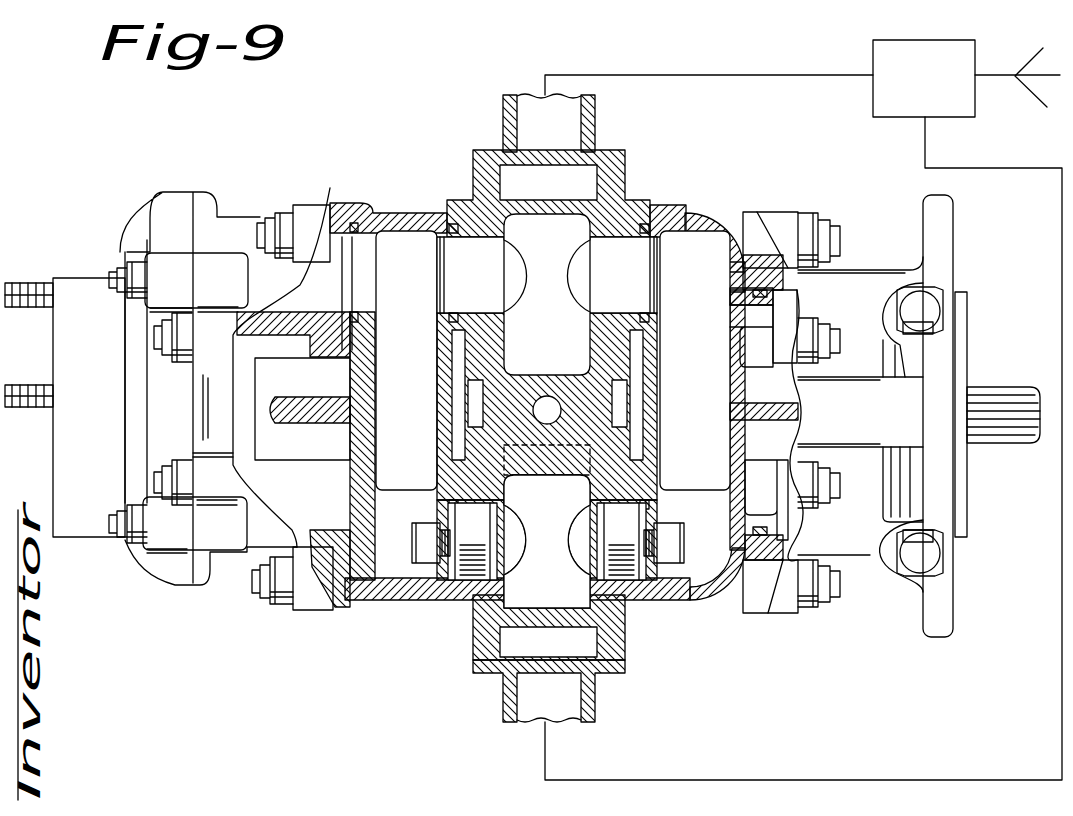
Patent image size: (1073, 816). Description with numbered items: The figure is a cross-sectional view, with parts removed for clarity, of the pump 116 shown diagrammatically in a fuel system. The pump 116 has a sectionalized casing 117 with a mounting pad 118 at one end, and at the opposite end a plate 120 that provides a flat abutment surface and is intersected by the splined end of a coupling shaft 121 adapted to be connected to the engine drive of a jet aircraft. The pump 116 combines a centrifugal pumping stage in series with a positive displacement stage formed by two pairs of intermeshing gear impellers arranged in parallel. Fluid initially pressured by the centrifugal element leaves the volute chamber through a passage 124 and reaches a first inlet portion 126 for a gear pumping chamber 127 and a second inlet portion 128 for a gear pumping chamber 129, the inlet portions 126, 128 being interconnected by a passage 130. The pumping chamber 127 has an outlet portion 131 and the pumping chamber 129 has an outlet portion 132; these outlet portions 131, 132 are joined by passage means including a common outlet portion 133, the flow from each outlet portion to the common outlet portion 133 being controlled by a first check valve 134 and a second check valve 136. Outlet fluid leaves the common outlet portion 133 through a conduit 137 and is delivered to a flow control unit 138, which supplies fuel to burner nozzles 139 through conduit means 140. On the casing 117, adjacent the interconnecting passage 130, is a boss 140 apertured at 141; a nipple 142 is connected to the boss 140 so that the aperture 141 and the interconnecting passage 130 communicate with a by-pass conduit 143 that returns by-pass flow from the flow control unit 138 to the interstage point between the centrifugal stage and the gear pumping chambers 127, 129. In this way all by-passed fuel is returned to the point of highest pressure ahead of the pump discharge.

The pump 116 is at (283, 196).
The sectionalized casing 117 is at (393, 205).
The mounting pad 118 is at (78, 278).
The plate 120 is at (940, 592).
The coupling shaft 121 is at (992, 398).
The passage 124 is at (324, 238).
The first inlet portion 126 is at (420, 235).
The gear pumping chamber 127 is at (400, 358).
The second inlet portion 128 is at (696, 238).
The gear pumping chamber 129 is at (688, 352).
The interconnecting passage 130 is at (626, 243).
The outlet portion 131 is at (400, 580).
The outlet portion 132 is at (697, 585).
The common outlet portion 133 is at (549, 598).
The first check valve 134 is at (485, 580).
The second check valve 136 is at (640, 590).
The conduit 137 is at (712, 780).
The flow control unit 138 is at (957, 117).
The burner nozzles 139 is at (1015, 75).
The boss 140 is at (618, 180).
The aperture 141 is at (565, 182).
The nipple 142 is at (503, 120).
The by-pass conduit 143 is at (700, 75).